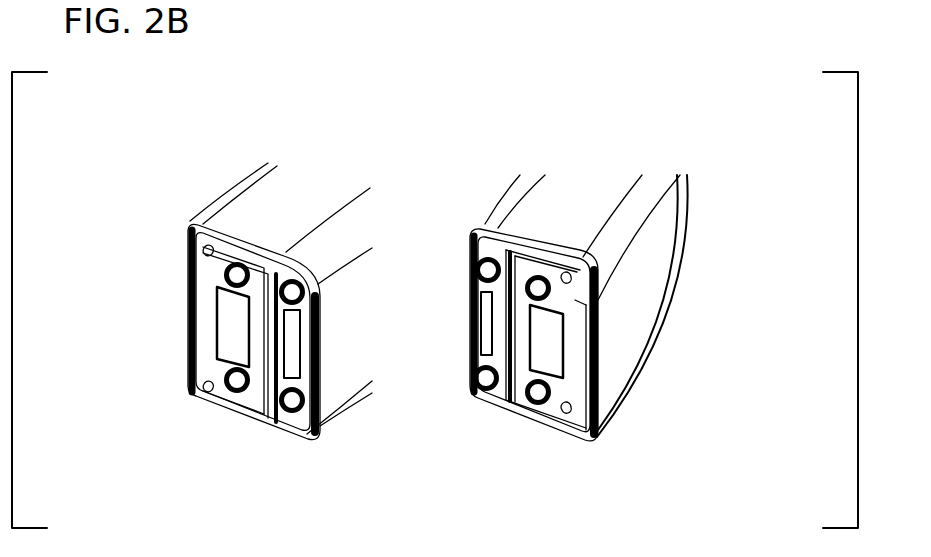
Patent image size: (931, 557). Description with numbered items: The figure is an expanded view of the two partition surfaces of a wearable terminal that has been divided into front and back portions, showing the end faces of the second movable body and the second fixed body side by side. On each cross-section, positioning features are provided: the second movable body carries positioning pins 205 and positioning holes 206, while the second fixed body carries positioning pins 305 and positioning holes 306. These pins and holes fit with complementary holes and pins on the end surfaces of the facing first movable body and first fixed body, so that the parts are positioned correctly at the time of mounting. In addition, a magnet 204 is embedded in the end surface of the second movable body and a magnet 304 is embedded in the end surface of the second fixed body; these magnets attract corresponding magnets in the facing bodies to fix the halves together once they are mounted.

The magnet 204 is at (230, 325).
The positioning pin 205 is at (541, 280).
The positioning hole 206 is at (225, 275).
The magnet 304 is at (297, 364).
The positioning pin 305 is at (490, 262).
The positioning hole 306 is at (293, 288).